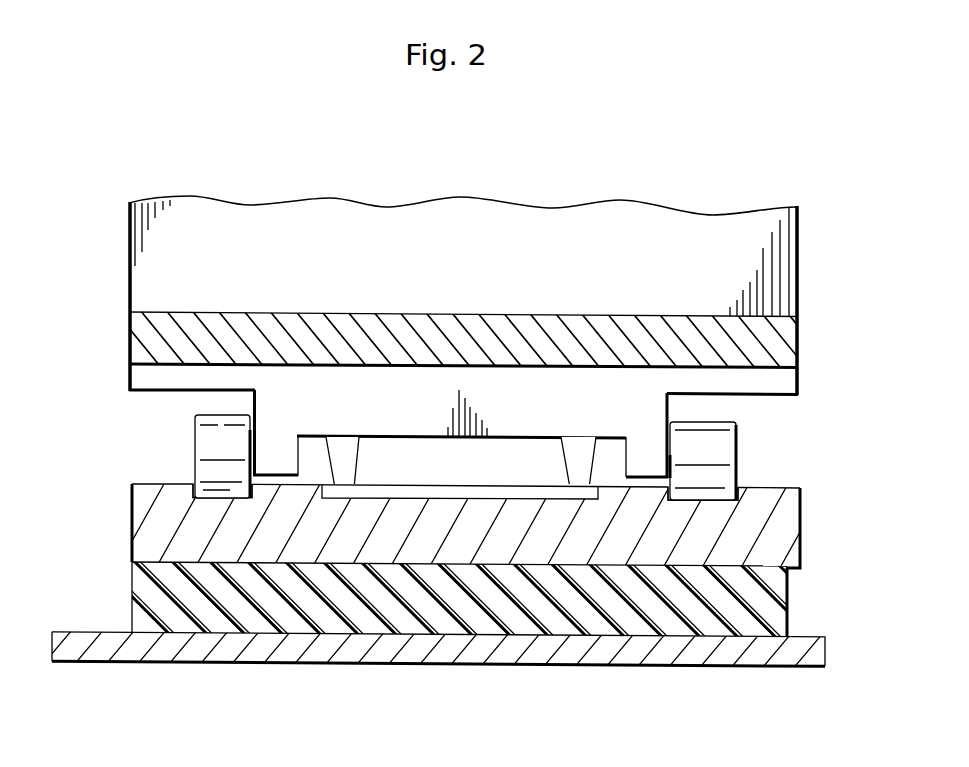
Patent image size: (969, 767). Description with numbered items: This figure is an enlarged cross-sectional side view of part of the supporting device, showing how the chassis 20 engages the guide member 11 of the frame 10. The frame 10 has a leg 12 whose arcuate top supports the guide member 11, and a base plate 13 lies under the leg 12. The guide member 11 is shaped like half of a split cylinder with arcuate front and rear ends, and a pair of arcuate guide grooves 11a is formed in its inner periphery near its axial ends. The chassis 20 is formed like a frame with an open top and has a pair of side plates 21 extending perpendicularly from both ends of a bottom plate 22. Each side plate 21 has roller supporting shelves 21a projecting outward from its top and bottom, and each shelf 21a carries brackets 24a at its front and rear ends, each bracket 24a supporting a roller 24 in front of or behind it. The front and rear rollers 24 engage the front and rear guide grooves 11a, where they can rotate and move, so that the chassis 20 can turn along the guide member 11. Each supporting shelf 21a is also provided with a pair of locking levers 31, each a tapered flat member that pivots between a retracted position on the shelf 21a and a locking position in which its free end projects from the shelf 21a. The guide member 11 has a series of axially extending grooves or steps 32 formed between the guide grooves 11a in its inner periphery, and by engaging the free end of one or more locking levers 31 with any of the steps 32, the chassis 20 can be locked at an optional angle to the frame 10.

The frame 10 is at (398, 665).
The guide member 11 is at (790, 538).
The guide grooves 11a is at (225, 498).
The leg 12 is at (775, 606).
The base plate 13 is at (610, 655).
The chassis 20 is at (800, 277).
The side plates 21 is at (140, 268).
The roller supporting shelves 21a is at (420, 430).
The bottom plate 22 is at (594, 330).
The rollers 24 is at (212, 451).
The brackets 24a is at (272, 442).
The locking levers 31 is at (351, 457).
The steps 32 is at (497, 492).